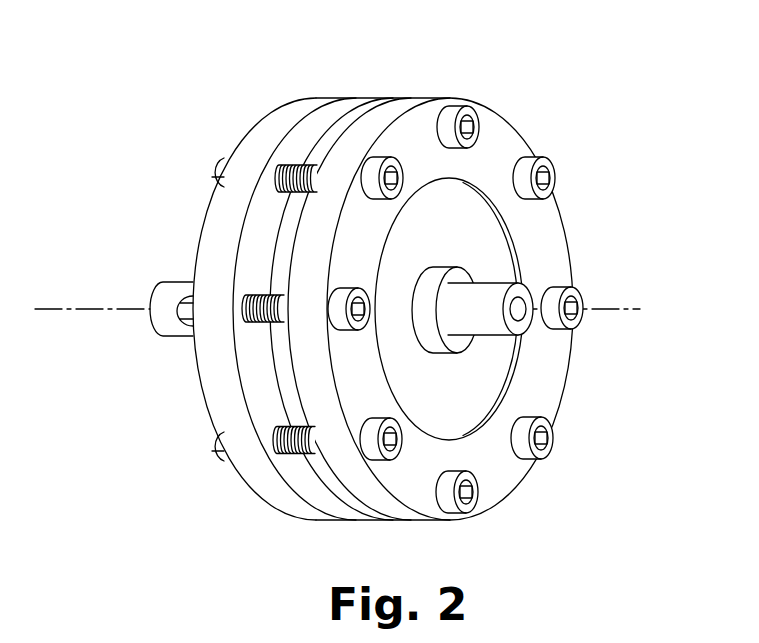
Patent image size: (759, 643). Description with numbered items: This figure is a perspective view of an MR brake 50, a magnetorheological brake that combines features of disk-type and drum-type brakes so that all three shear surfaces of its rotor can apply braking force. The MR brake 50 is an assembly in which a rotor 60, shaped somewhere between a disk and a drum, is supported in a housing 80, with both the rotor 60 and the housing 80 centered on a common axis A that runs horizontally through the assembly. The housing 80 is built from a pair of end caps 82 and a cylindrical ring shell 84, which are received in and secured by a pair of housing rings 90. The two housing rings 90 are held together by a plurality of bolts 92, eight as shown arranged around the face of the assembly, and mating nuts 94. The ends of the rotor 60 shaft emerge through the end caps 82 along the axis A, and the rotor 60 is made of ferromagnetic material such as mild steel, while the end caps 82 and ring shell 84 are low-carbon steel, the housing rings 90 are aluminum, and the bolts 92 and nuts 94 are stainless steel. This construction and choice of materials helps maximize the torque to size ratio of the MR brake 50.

The MR brake 50 is at (130, 150).
The rotor 60 is at (165, 298).
The housing 80 is at (538, 220).
The end caps 82 is at (452, 220).
The cylindrical ring shell 84 is at (278, 274).
The housing rings 90 is at (218, 385).
The bolts 92 is at (442, 118).
The nuts 94 is at (184, 295).
The axis A is at (92, 310).